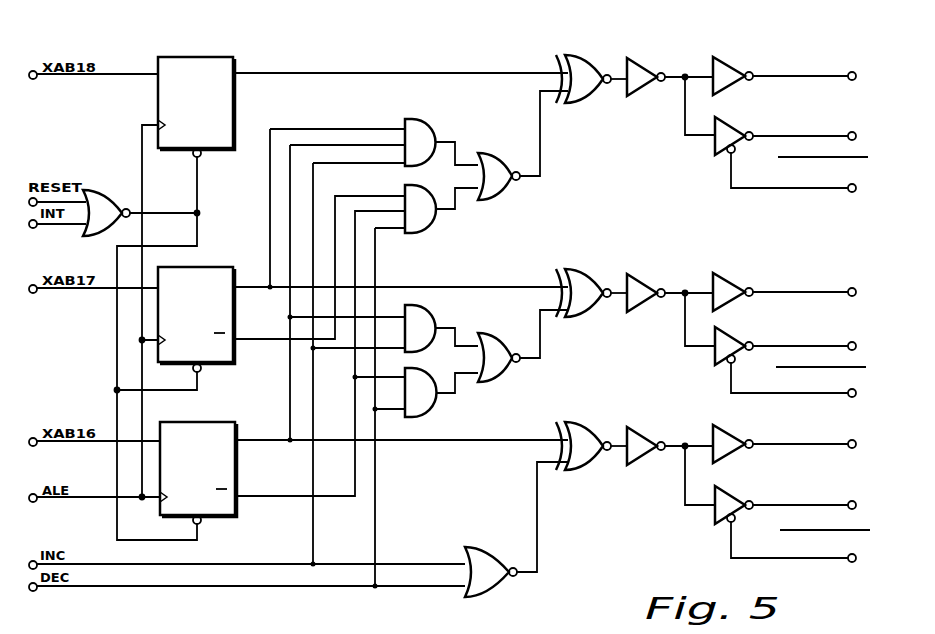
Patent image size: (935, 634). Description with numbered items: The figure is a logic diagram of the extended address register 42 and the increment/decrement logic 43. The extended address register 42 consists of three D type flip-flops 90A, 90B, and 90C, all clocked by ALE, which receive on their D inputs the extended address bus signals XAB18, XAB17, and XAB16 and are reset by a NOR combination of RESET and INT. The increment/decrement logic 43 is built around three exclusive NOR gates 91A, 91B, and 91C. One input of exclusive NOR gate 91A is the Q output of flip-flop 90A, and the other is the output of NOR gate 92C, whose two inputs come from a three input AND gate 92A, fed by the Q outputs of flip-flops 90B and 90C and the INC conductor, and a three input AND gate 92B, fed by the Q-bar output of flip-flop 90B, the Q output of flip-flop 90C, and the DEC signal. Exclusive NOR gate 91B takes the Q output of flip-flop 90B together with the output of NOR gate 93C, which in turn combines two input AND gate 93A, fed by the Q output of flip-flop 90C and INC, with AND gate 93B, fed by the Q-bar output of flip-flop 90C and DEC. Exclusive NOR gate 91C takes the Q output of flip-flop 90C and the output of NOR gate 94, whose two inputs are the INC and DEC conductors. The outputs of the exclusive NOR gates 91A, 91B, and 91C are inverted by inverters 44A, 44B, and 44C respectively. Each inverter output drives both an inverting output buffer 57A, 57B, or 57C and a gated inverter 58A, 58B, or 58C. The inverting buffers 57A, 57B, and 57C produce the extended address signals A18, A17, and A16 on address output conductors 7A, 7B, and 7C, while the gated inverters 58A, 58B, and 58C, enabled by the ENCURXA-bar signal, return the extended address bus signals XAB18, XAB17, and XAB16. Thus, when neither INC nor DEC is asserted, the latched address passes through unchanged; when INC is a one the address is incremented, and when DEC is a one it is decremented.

The extended address register 42 is at (255, 40).
The increment/decrement logic 43 is at (643, 40).
The D type flip-flop 90A is at (194, 60).
The D type flip-flop 90B is at (201, 267).
The D type flip-flop 90C is at (207, 422).
The three input AND gate 92A is at (432, 122).
The three input AND gate 92B is at (433, 233).
The NOR gate 92C is at (480, 155).
The two input AND gate 93A is at (437, 307).
The two input AND gate 93B is at (437, 416).
The NOR gate 93C is at (481, 335).
The NOR gate 94 is at (474, 548).
The exclusive NOR gate 91A is at (571, 56).
The exclusive NOR gate 91B is at (571, 269).
The exclusive NOR gate 91C is at (572, 422).
The inverter 44A is at (644, 62).
The inverter 44B is at (636, 272).
The inverter 44C is at (637, 427).
The inverting output buffer 57A is at (727, 62).
The inverting output buffer 57B is at (721, 273).
The inverting output buffer 57C is at (721, 430).
The gated inverter 58A is at (731, 120).
The gated inverter 58B is at (731, 328).
The gated inverter 58C is at (731, 488).
The address output conductor 7A is at (790, 76).
The address output conductor 7B is at (805, 292).
The address output conductor 7C is at (795, 444).